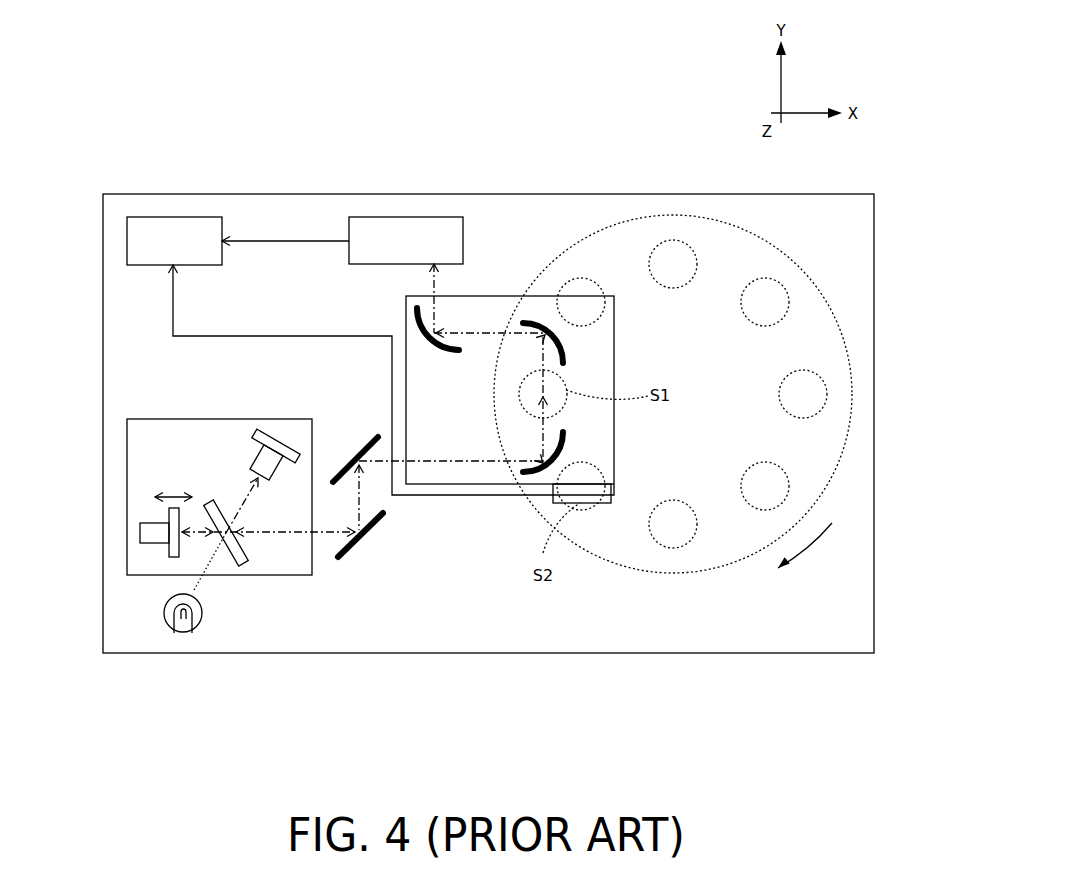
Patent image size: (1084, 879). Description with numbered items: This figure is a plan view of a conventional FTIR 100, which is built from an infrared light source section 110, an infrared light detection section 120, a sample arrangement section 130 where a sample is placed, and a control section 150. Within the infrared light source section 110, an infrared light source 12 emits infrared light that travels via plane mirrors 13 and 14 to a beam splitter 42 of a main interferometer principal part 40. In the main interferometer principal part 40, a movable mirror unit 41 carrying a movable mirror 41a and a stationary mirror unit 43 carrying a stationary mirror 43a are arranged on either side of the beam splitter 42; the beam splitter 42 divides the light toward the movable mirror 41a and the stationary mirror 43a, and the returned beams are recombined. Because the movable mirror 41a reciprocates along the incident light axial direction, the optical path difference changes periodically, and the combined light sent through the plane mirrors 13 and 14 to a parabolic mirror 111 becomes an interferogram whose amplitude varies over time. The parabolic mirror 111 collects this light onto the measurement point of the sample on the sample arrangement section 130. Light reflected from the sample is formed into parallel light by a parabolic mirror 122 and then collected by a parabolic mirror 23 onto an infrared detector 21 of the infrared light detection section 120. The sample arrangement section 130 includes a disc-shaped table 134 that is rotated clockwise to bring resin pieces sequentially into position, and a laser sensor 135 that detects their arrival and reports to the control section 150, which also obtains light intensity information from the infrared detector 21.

The FTIR 100 is at (296, 96).
The control section 150 is at (173, 217).
The infrared detector 21 is at (405, 217).
The parabolic mirror 23 is at (460, 346).
The infrared light detection section 120 is at (486, 402).
The parabolic mirror 122 is at (524, 321).
The parabolic mirror 111 is at (522, 474).
The sample arrangement section 130 is at (673, 488).
The disc-shaped table 134 is at (676, 574).
The laser sensor 135 is at (603, 503).
The infrared light source section 110 is at (283, 563).
The main interferometer principal part 40 is at (233, 539).
The movable mirror unit 41 is at (168, 515).
The movable mirror 41a is at (167, 545).
The beam splitter 42 is at (210, 503).
The stationary mirror unit 43 is at (259, 468).
The stationary mirror 43a is at (277, 441).
The infrared light source 12 is at (183, 633).
The plane mirror 13 is at (333, 484).
The plane mirror 14 is at (370, 613).